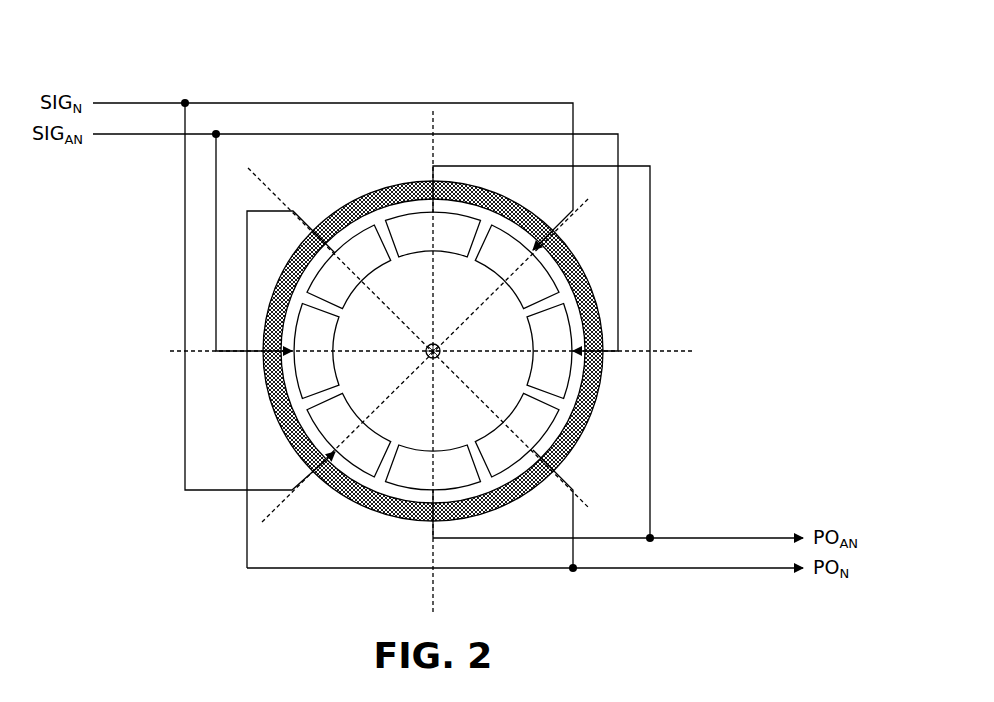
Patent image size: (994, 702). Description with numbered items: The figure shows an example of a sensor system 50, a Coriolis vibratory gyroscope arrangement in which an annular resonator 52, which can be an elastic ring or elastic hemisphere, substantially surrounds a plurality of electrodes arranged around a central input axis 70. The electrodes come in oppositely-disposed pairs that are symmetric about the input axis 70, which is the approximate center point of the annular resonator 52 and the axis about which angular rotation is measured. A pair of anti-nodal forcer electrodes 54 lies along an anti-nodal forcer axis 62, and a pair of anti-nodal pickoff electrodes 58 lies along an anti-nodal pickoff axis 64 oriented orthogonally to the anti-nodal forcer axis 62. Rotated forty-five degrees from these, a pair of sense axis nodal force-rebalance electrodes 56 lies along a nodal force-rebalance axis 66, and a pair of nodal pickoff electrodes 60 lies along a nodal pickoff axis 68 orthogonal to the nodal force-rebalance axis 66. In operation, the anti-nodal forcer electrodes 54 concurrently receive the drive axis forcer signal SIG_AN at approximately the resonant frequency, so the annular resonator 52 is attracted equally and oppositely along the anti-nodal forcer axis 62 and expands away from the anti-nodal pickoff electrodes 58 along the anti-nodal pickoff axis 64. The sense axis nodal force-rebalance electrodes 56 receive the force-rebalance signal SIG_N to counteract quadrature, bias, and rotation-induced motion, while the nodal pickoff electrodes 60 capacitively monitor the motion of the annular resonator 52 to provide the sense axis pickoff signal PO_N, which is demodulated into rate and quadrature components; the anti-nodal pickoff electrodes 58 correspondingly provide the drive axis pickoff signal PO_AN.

The sensor system 50 is at (100, 47).
The annular resonator 52 is at (397, 184).
The anti-nodal forcer electrodes 54 is at (433, 351).
The sense axis nodal force-rebalance electrodes 56 is at (433, 351).
The anti-nodal pickoff electrodes 58 is at (433, 351).
The nodal pickoff electrodes 60 is at (433, 351).
The anti-nodal forcer axis 62 is at (668, 351).
The anti-nodal pickoff axis 64 is at (436, 588).
The nodal force-rebalance axis 66 is at (275, 512).
The nodal pickoff axis 68 is at (263, 176).
The input axis 70 is at (440, 346).